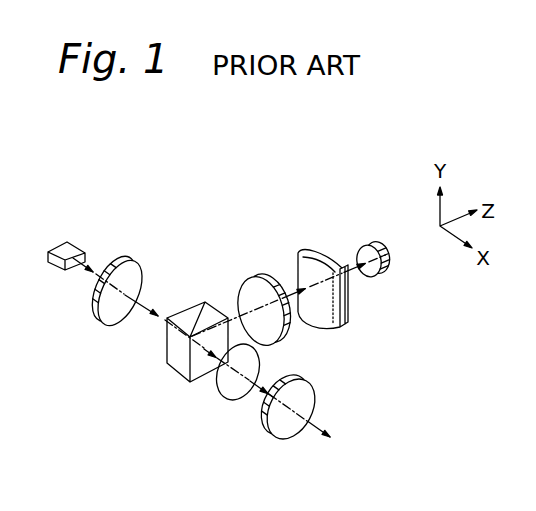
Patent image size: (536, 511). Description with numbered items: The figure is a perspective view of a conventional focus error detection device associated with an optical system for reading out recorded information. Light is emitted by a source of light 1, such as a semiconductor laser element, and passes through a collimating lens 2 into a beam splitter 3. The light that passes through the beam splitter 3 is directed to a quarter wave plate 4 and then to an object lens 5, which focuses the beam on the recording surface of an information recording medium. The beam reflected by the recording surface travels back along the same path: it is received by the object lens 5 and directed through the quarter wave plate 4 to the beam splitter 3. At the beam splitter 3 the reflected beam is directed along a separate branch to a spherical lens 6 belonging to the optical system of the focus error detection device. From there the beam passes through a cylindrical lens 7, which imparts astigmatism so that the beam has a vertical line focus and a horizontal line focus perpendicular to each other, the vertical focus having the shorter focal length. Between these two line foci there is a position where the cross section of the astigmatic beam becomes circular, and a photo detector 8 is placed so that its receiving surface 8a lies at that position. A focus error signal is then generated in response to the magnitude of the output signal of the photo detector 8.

The source of light 1 is at (78, 245).
The collimating lens 2 is at (148, 273).
The beam splitter 3 is at (172, 367).
The quarter wave plate 4 is at (223, 398).
The object lens 5 is at (273, 437).
The spherical lens 6 is at (257, 283).
The cylindrical lens 7 is at (314, 254).
The photo detector 8 is at (382, 258).
The receiving surface 8a is at (373, 245).